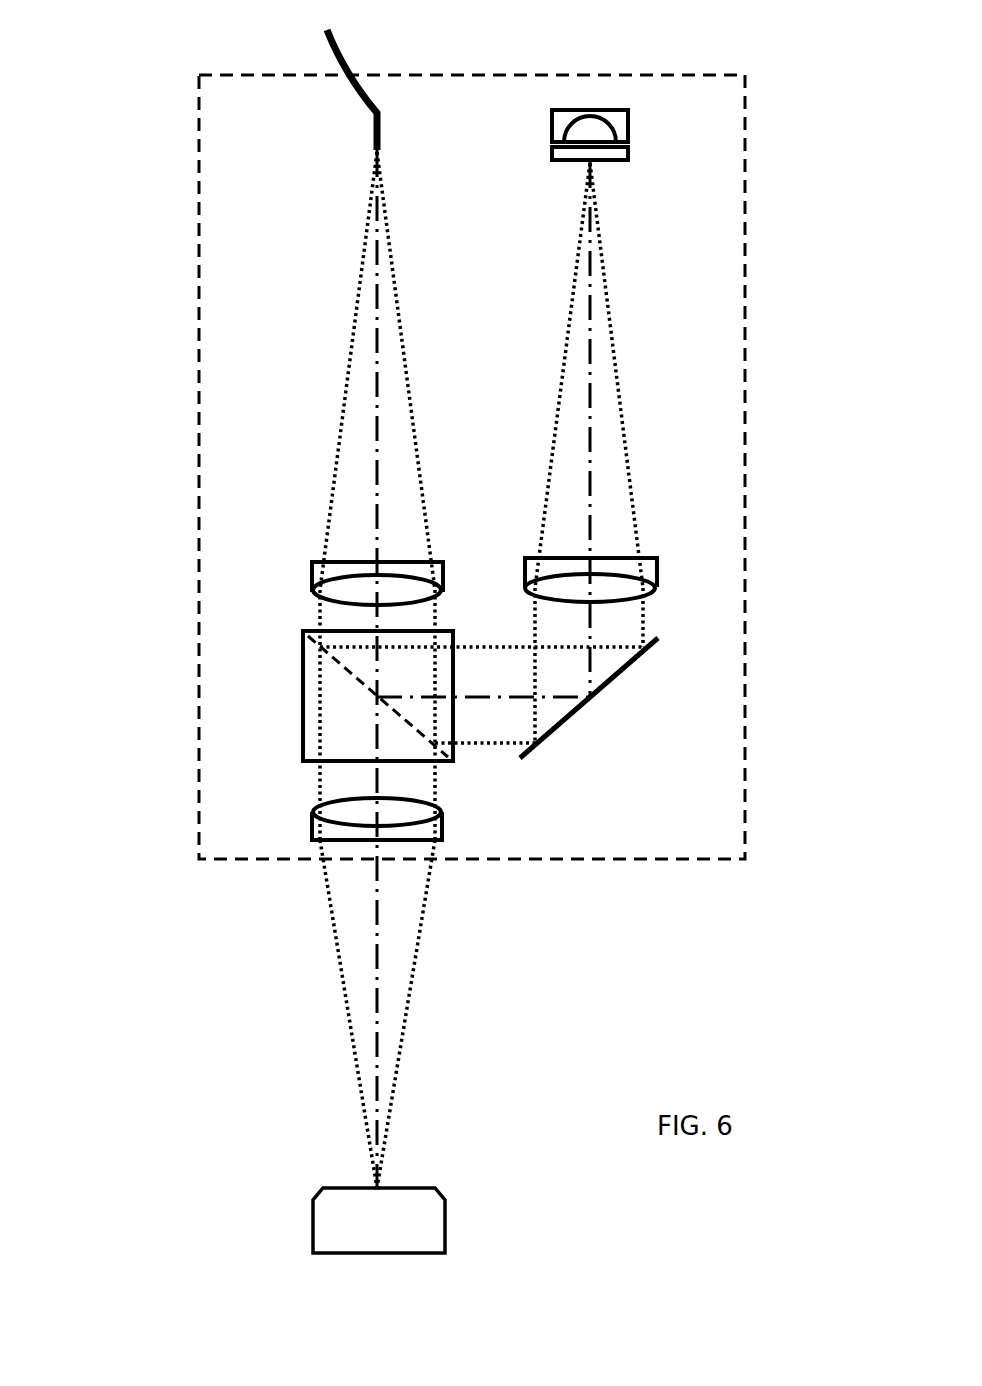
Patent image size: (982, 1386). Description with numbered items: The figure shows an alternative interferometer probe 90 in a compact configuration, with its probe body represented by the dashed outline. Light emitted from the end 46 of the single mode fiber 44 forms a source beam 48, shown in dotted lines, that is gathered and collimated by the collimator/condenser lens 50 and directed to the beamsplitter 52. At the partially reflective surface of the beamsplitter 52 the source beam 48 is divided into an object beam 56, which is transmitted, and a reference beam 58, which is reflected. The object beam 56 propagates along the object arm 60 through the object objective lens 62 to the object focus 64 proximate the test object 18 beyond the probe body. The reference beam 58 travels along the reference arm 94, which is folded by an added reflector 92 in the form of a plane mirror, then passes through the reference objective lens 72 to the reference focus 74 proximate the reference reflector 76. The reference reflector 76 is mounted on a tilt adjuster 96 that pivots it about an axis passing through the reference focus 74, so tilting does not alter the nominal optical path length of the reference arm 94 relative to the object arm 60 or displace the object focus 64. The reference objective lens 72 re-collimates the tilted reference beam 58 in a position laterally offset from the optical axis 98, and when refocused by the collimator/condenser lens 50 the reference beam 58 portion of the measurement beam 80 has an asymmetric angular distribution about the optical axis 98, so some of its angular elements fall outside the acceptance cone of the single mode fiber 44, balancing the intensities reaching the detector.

The test object 18 is at (313, 1198).
The single mode fiber 44 is at (327, 50).
The end of the single mode fiber 46 is at (377, 153).
The source beam 48 is at (447, 496).
The collimator/condenser lens 50 is at (312, 578).
The beamsplitter 52 is at (303, 712).
The object beam 56 is at (425, 932).
The reference beam 58 is at (622, 357).
The object arm 60 is at (332, 1014).
The object objective lens 62 is at (312, 815).
The object focus 64 is at (377, 1186).
The reference objective lens 72 is at (657, 568).
The reference focus 74 is at (590, 163).
The reference reflector 76 is at (570, 162).
The measurement beam 80 is at (350, 345).
The alternative interferometer probe 90 is at (198, 218).
The reflector 92 is at (575, 713).
The reference arm 94 is at (644, 453).
The tilt adjuster 96 is at (628, 130).
The optical axis 98 is at (377, 448).